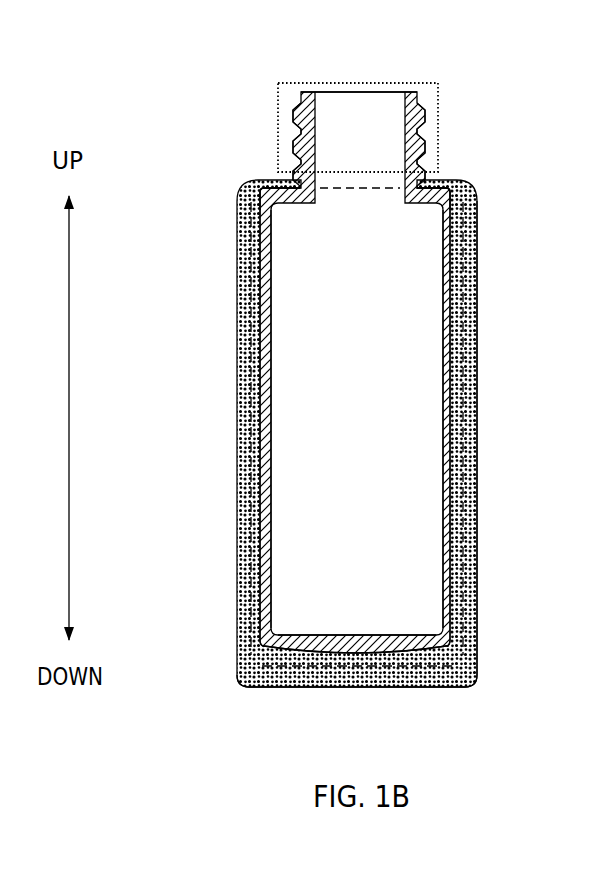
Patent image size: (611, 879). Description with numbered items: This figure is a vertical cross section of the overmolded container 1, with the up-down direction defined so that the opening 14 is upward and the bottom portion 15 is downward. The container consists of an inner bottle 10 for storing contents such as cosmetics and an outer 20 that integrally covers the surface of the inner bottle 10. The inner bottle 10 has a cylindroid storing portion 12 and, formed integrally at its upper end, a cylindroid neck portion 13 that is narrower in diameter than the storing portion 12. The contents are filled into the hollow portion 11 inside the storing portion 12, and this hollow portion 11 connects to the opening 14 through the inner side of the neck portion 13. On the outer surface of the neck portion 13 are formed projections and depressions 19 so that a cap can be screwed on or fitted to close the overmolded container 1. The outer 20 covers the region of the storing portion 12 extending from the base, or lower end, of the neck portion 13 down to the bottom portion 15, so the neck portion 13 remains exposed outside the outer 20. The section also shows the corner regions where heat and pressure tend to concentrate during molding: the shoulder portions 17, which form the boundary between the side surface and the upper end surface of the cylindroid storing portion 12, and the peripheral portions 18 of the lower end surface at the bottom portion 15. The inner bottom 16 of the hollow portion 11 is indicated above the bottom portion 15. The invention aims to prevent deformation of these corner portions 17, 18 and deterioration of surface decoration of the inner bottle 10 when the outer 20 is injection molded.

The overmolded container 1 is at (361, 384).
The inner bottle 10 is at (271, 370).
The hollow portion 11 is at (372, 461).
The storing portion 12 is at (478, 242).
The neck portion 13 is at (278, 122).
The opening 14 is at (351, 106).
The bottom portion 15 is at (357, 664).
The inner bottom 16 is at (356, 632).
The shoulder portions 17 is at (250, 203).
The peripheral portions of the lower end surface 18 is at (264, 689).
The projections and depressions 19 is at (294, 137).
The outer 20 is at (478, 337).